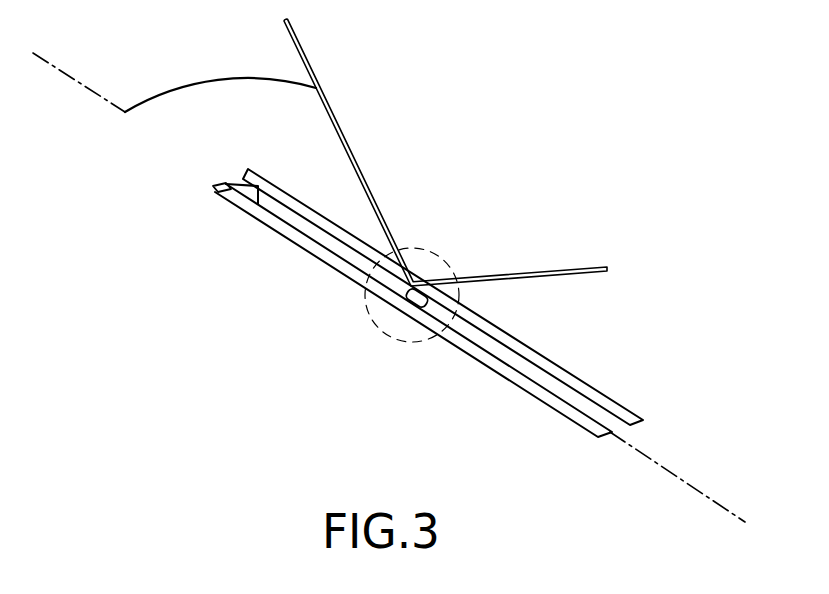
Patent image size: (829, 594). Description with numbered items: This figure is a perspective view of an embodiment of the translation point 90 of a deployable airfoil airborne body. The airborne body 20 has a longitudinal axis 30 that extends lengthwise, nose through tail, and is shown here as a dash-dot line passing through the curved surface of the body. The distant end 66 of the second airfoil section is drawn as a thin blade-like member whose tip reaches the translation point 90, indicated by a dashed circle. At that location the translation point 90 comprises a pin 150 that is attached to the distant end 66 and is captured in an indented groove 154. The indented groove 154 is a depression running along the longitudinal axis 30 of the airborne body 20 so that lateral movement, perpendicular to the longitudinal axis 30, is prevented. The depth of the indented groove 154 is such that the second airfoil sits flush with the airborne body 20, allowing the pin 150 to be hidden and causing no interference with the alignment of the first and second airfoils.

The airborne body 20 is at (177, 88).
The longitudinal axis 30 is at (680, 478).
The distant end 66 is at (347, 138).
The translation point 90 is at (425, 248).
The pin 150 is at (418, 295).
The indented groove 154 is at (218, 187).